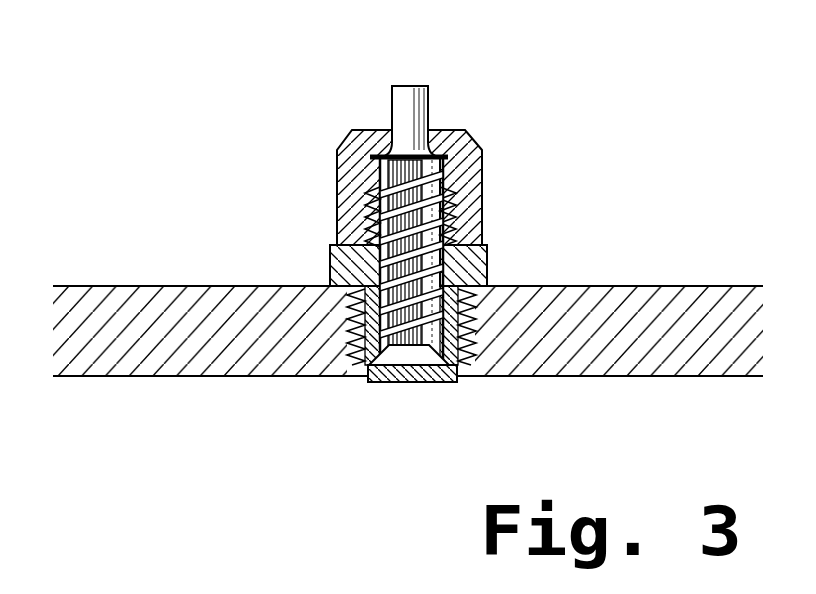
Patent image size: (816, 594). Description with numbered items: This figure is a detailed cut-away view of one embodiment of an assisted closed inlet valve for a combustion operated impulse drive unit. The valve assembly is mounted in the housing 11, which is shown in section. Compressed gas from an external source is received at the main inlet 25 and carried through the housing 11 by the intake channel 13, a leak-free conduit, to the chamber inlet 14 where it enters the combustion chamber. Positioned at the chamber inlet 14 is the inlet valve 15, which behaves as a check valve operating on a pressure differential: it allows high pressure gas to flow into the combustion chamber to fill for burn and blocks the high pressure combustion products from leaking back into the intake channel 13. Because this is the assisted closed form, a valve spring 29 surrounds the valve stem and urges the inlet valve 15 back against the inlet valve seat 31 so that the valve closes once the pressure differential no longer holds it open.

The housing 11 is at (215, 287).
The intake channel 13 is at (402, 128).
The chamber inlet 14 is at (423, 380).
The inlet valve 15 is at (407, 357).
The main inlet 25 is at (405, 84).
The valve spring 29 is at (447, 210).
The inlet valve seat 31 is at (373, 380).